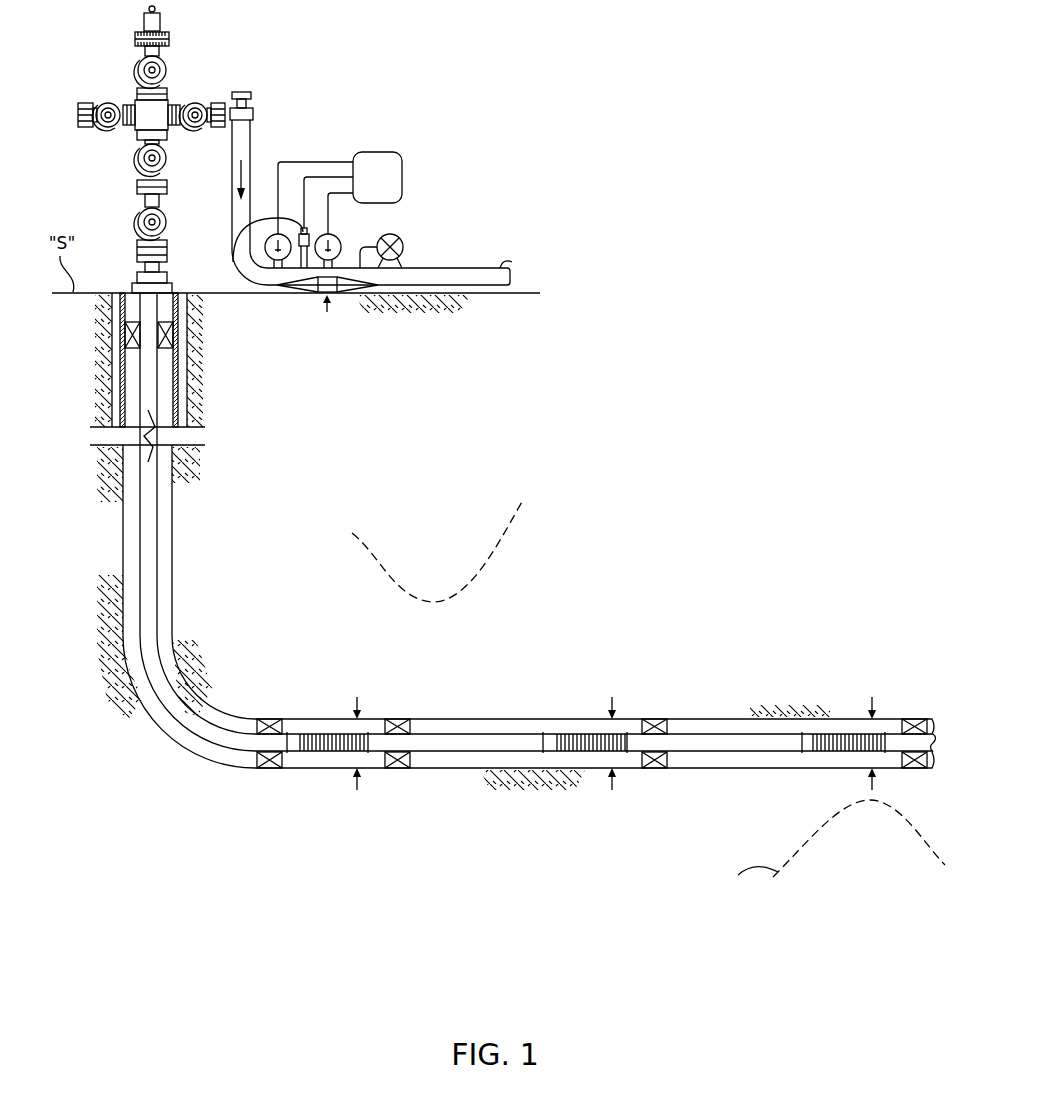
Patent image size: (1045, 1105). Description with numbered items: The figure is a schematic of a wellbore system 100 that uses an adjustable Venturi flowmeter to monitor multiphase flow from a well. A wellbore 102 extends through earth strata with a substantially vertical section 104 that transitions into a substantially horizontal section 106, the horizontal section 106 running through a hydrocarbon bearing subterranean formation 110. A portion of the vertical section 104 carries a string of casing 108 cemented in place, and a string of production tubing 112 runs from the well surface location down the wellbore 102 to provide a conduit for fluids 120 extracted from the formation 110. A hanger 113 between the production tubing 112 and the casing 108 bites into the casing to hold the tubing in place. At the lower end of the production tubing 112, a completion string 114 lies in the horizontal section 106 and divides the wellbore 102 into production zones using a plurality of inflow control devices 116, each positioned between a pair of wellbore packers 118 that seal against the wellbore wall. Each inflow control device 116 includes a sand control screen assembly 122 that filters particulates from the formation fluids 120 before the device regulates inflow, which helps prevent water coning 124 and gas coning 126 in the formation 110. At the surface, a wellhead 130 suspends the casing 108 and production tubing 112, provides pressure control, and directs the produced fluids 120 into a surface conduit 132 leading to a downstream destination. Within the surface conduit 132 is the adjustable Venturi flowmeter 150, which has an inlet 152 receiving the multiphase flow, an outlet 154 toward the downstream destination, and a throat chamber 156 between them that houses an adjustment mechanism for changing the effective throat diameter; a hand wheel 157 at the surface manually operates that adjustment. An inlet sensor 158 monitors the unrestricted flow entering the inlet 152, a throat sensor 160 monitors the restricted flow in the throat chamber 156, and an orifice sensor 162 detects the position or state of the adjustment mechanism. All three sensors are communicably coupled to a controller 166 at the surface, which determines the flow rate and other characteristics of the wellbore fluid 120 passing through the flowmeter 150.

The wellbore system 100 is at (358, 452).
The wellbore 102 is at (482, 493).
The vertical section 104 is at (128, 500).
The horizontal section 106 is at (468, 712).
The casing 108 is at (124, 392).
The subterranean formation 110 is at (489, 637).
The production tubing 112 is at (132, 585).
The hanger 113 is at (124, 328).
The completion string 114 is at (586, 735).
The inflow control device 116 is at (289, 722).
The wellbore packer 118 is at (270, 770).
The fluids 120 is at (357, 695).
The sand control screen assembly 122 is at (333, 732).
The water coning 124 is at (740, 875).
The gas coning 126 is at (516, 513).
The wellhead 130 is at (166, 36).
The surface conduit 132 is at (512, 262).
The adjustable Venturi flowmeter 150 is at (452, 195).
The inlet 152 is at (276, 289).
The outlet 154 is at (378, 296).
The throat chamber 156 is at (327, 315).
The hand wheel 157 is at (404, 247).
The inlet sensor 158 is at (264, 250).
The throat sensor 160 is at (340, 238).
The orifice sensor 162 is at (266, 236).
The controller 166 is at (405, 166).